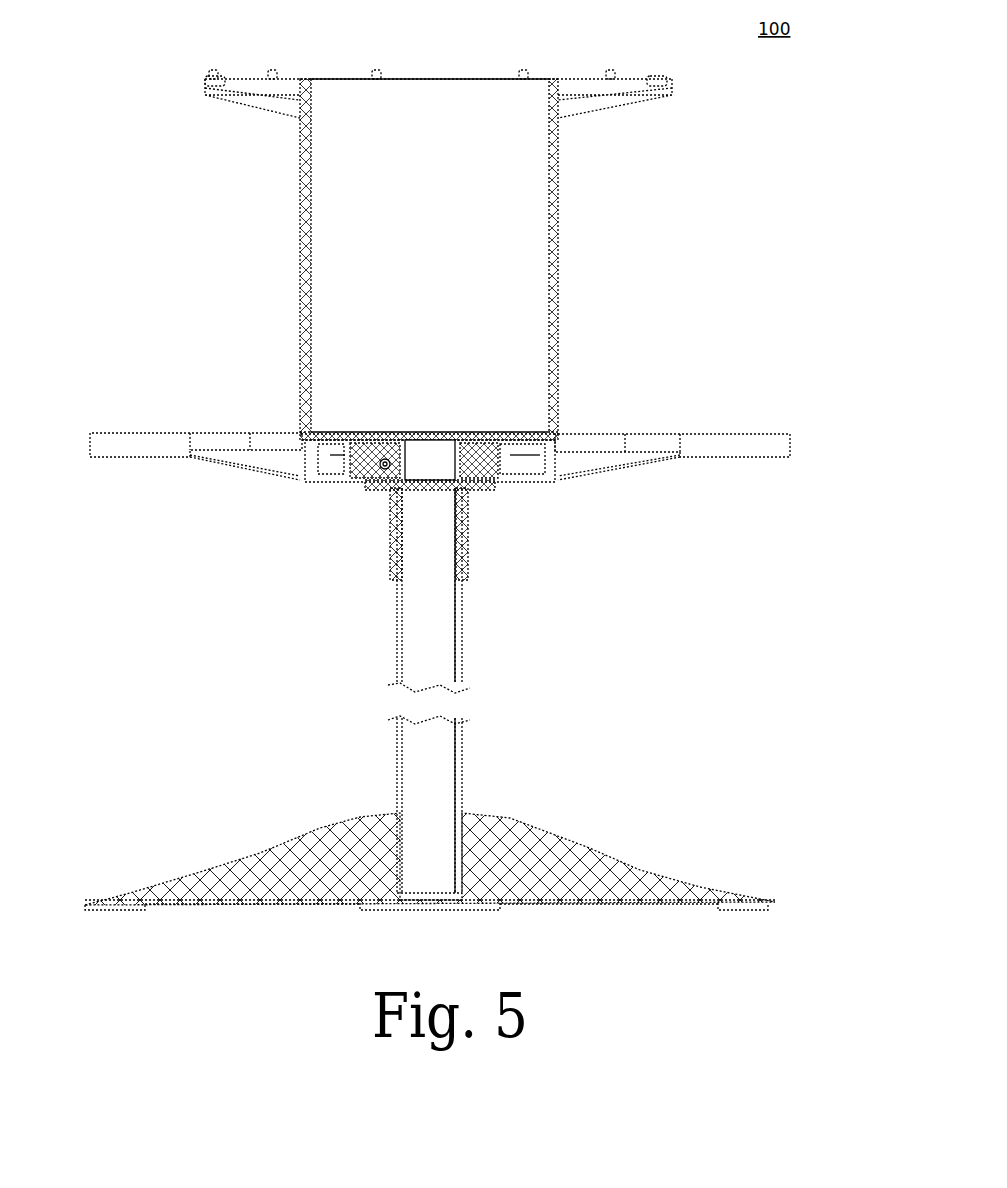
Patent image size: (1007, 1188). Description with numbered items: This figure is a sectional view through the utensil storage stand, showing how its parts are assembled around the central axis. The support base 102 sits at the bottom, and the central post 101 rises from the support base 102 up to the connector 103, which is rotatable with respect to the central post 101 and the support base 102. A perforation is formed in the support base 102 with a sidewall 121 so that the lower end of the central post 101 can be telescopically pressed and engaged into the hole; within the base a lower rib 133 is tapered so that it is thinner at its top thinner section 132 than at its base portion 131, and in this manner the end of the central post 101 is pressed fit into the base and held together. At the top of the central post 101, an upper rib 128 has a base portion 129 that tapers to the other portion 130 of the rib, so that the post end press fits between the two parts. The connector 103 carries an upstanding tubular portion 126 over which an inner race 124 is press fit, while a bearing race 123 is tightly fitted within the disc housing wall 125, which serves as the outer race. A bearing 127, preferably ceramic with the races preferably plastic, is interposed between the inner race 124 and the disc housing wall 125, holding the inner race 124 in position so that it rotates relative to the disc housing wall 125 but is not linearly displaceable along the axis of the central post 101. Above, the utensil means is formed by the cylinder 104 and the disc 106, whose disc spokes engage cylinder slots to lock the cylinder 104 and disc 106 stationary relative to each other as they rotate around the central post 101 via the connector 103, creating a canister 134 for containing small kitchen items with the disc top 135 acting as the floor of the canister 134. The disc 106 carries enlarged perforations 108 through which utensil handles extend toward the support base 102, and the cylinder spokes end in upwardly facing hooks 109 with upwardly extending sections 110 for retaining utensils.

The central post 101 is at (460, 665).
The support base 102 is at (220, 870).
The connector 103 is at (392, 485).
The cylinder 104 is at (562, 228).
The disc 106 is at (205, 95).
The perforation 108 is at (134, 463).
The upwardly facing hook 109 is at (657, 97).
The upwardly extending section 110 is at (517, 64).
The sidewall 121 is at (395, 835).
The bearing race 123 is at (490, 462).
The inner race 124 is at (462, 440).
The disc housing wall 125 is at (488, 478).
The upstanding tubular portion 126 is at (447, 448).
The bearing 127 is at (490, 455).
The upper rib 128 is at (470, 512).
The base portion 129 is at (400, 450).
The other portion 130 is at (458, 567).
The base portion of lower rib 131 is at (462, 893).
The top thinner section 132 is at (462, 818).
The lower rib 133 is at (462, 850).
The canister 134 is at (470, 235).
The disc top 135 is at (400, 448).